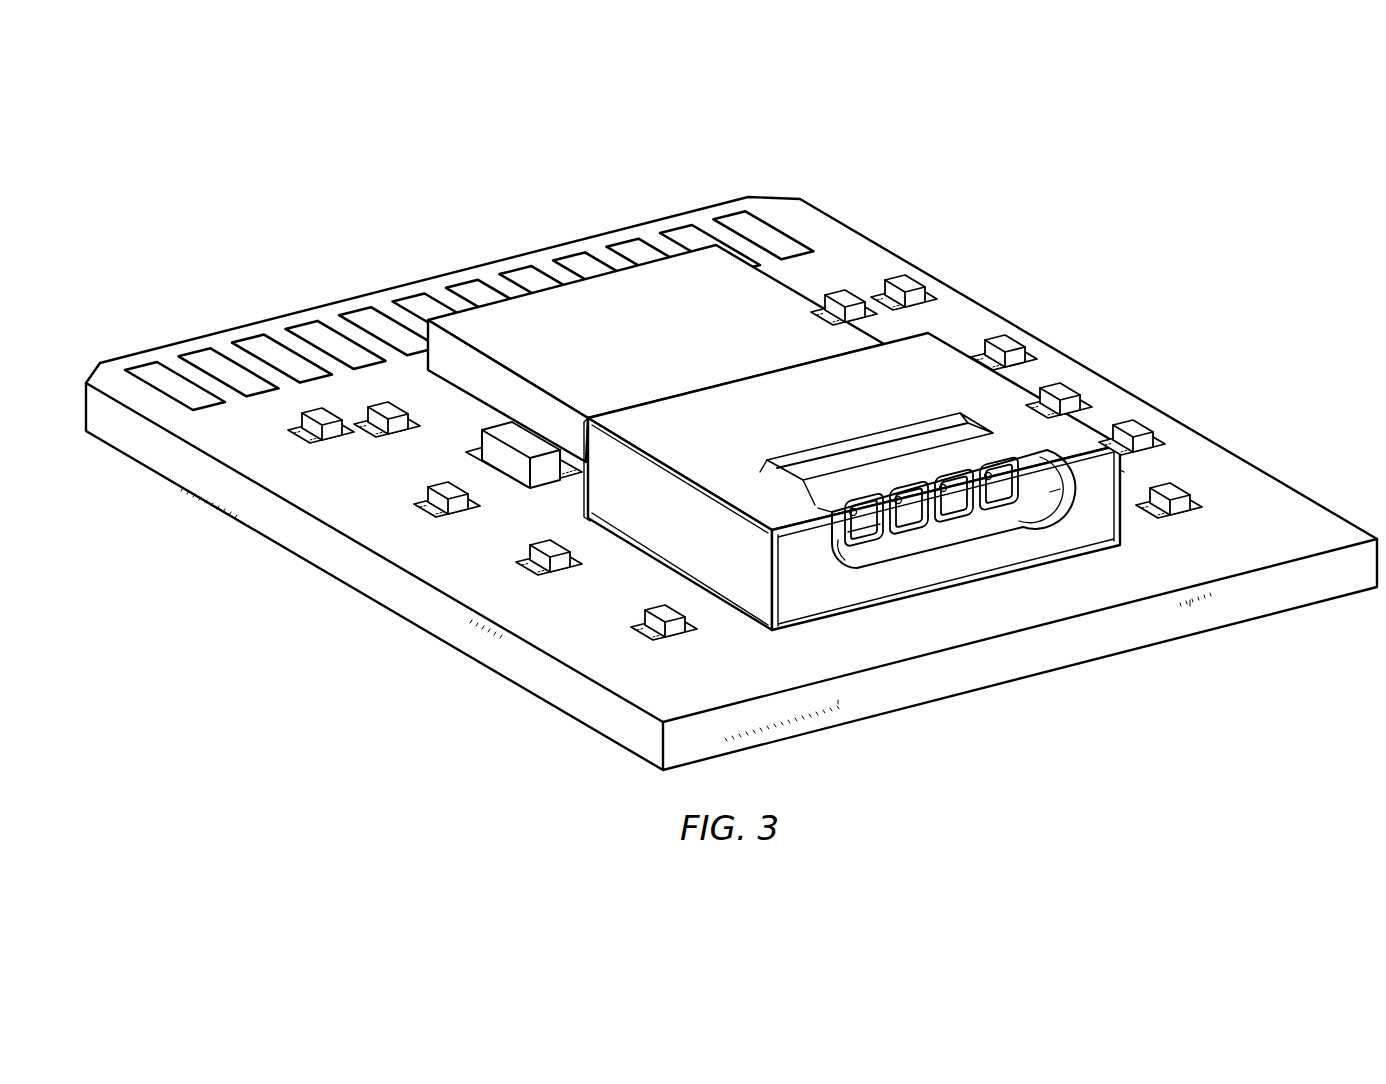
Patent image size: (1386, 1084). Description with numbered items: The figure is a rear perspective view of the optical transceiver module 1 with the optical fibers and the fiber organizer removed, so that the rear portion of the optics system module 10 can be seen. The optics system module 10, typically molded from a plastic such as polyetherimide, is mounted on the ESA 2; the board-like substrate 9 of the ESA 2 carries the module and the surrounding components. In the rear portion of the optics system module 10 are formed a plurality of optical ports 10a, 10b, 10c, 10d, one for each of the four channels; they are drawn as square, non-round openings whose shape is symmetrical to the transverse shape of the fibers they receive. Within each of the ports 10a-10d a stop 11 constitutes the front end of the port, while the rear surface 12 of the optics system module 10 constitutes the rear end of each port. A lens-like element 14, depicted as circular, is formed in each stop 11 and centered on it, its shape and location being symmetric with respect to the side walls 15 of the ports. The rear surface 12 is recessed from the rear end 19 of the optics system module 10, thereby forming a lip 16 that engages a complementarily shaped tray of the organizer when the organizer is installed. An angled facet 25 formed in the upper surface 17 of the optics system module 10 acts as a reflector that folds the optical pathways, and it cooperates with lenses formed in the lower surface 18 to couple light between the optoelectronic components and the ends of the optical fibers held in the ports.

The optical transceiver module 1 is at (380, 174).
The ESA 2 is at (966, 263).
The printed circuit board 9 is at (1258, 497).
The optics system module 10 is at (812, 437).
The optical port 10a is at (880, 558).
The optical port 10b is at (925, 546).
The optical port 10c is at (970, 535).
The optical port 10d is at (1012, 527).
The stop 11 is at (846, 533).
The rear surface 12 is at (1030, 462).
The lens-like element 14 is at (835, 468).
The side walls 15 is at (985, 475).
The lip 16 is at (862, 568).
The upper surface 17 is at (688, 425).
The lower surface 18 is at (649, 566).
The rear end 19 is at (1122, 470).
The angled facet 25 is at (800, 477).